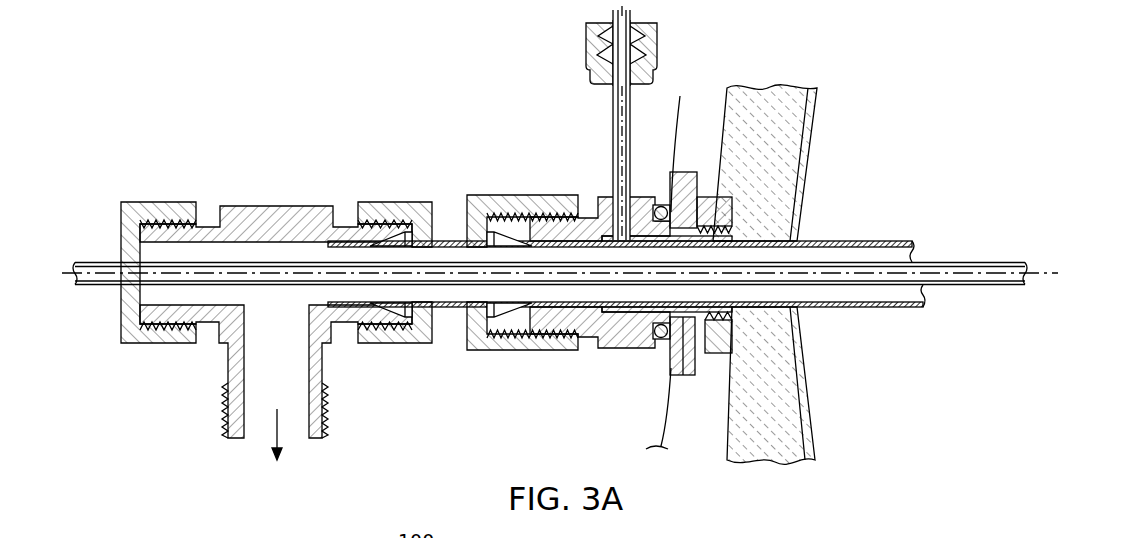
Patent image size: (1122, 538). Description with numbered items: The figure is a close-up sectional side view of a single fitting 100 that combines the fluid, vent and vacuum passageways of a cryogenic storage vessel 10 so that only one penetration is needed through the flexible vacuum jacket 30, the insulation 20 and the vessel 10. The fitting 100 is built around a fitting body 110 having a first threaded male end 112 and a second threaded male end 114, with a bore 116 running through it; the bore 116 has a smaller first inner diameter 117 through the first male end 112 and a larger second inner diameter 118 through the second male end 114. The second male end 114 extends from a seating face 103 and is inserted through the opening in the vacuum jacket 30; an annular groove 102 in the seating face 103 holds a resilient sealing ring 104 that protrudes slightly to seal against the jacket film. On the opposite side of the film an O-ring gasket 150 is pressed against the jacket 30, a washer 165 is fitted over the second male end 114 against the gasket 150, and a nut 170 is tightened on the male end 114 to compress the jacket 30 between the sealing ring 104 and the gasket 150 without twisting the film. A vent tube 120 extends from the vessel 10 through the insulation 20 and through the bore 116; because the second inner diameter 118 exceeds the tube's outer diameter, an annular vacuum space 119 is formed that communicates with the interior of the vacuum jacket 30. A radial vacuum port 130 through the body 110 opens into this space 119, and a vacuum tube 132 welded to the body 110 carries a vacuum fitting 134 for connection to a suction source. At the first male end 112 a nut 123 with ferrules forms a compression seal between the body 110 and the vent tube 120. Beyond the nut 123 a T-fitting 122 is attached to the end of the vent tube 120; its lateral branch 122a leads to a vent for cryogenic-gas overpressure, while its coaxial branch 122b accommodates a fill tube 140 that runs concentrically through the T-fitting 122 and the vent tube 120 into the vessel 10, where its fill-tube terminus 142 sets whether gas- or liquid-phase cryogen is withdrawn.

The fitting 100 is at (466, 110).
The storage vessel 10 is at (812, 105).
The insulation 20 is at (770, 130).
The flexible vacuum jacket 30 is at (680, 100).
The annular groove 102 is at (660, 205).
The seating face 103 is at (676, 200).
The resilient sealing ring 104 is at (660, 338).
The fitting body 110 is at (591, 336).
The first threaded male end 112 is at (508, 216).
The second threaded male end 114 is at (725, 232).
The bore 116 is at (550, 258).
The first inner diameter 117 is at (555, 302).
The second inner diameter 118 is at (708, 306).
The annular vacuum space 119 is at (720, 338).
The vent tube 120 is at (905, 307).
The T-fitting 122 is at (185, 367).
The lateral branch 122a is at (325, 371).
The coaxial branch 122b is at (172, 216).
The nut 123 is at (478, 350).
The radial vacuum port 130 is at (616, 210).
The vacuum tube 132 is at (613, 103).
The vacuum fitting 134 is at (586, 53).
The fill tube 140 is at (977, 287).
The fill-tube terminus 142 is at (1028, 272).
The O-ring gasket 150 is at (675, 370).
The washer 165 is at (698, 205).
The nut 170 is at (728, 345).